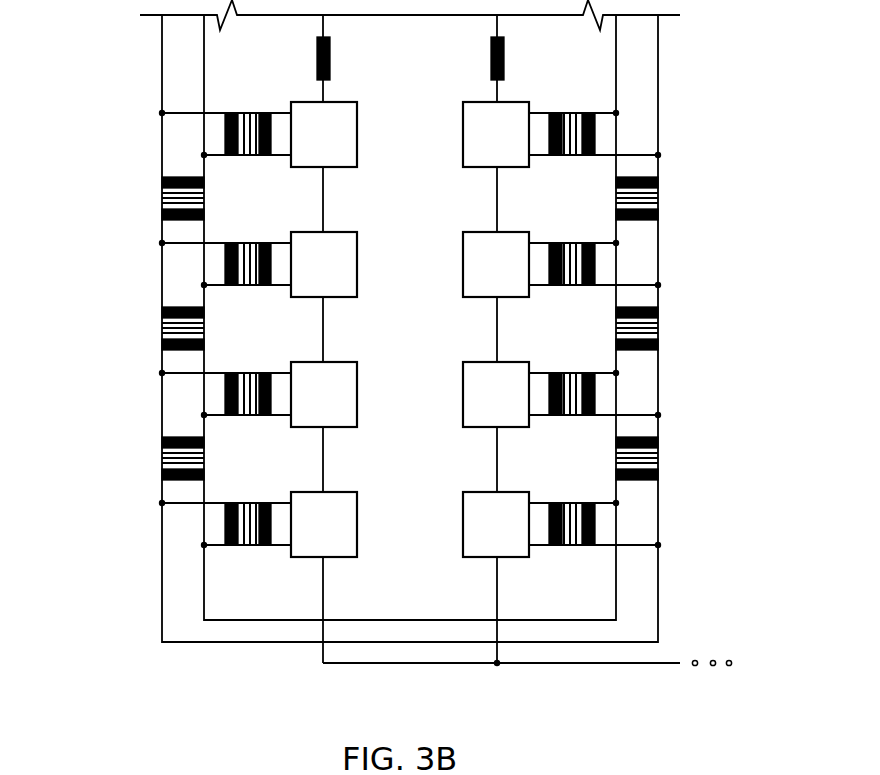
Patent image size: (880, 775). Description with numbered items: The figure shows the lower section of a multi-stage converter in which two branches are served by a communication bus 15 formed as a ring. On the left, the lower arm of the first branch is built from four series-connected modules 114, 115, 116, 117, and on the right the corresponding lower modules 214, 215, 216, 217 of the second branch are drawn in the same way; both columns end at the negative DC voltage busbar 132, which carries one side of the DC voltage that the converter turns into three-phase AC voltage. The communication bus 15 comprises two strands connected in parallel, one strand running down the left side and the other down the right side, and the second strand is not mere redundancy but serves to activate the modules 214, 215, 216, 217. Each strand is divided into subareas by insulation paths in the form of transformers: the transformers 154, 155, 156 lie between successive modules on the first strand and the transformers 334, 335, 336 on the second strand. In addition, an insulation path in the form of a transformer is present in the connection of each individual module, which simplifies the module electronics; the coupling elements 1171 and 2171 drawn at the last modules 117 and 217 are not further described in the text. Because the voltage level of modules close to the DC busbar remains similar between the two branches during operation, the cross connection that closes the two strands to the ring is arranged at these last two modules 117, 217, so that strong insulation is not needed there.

The communication bus 15 is at (313, 682).
The module 114 is at (357, 125).
The module 115 is at (357, 255).
The module 116 is at (357, 398).
The module 117 is at (357, 533).
The coil of fourth driving unit 1171 is at (248, 558).
The negative DC voltage busbar 132 is at (408, 663).
The transformer 154 is at (150, 198).
The transformer 155 is at (150, 330).
The transformer 156 is at (150, 460).
The module 214 is at (463, 146).
The module 215 is at (463, 276).
The module 216 is at (463, 382).
The module 217 is at (463, 512).
The coil of fourth driving unit of second column 2171 is at (573, 558).
The transformer 334 is at (670, 198).
The transformer 335 is at (670, 330).
The transformer 336 is at (670, 460).